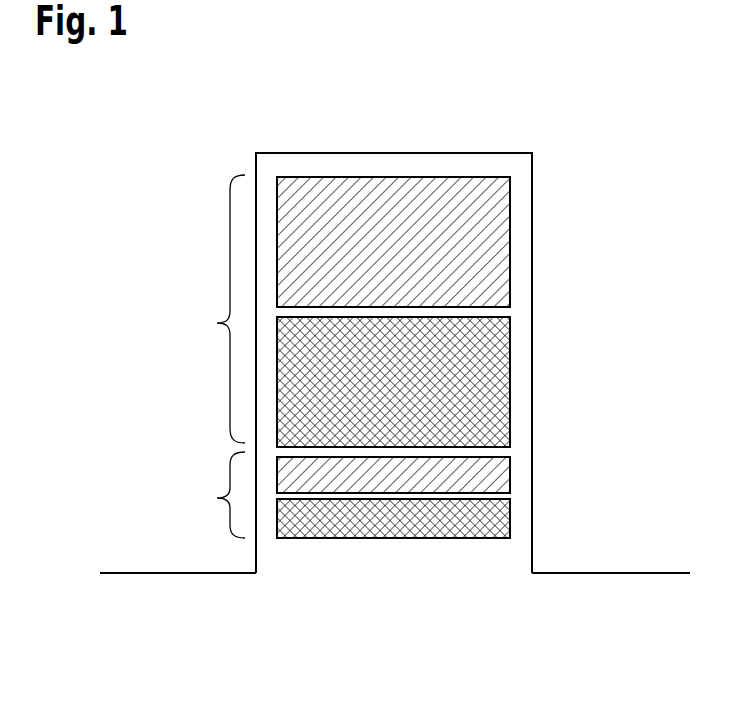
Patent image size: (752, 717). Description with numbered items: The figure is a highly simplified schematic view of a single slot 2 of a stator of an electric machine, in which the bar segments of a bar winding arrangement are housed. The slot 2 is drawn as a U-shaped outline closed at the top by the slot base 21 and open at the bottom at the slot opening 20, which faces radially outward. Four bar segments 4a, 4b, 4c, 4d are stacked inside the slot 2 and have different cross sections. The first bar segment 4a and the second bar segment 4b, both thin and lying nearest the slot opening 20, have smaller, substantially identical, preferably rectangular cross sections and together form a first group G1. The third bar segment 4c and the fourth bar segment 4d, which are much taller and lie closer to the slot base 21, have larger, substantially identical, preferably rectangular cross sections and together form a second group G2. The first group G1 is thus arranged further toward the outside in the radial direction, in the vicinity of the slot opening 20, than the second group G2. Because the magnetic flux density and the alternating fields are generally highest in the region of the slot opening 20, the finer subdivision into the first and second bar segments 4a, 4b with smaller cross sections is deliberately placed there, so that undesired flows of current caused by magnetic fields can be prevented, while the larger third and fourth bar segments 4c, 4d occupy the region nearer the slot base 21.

The slot 2 is at (532, 307).
The slot base 21 is at (440, 153).
The first bar segment 4a is at (480, 522).
The second bar segment 4b is at (480, 480).
The third bar segment 4c is at (480, 395).
The fourth bar segment 4d is at (480, 223).
The first group of bar segments G1 is at (211, 495).
The second group of bar segments G2 is at (211, 309).
The slot opening 20 is at (407, 580).